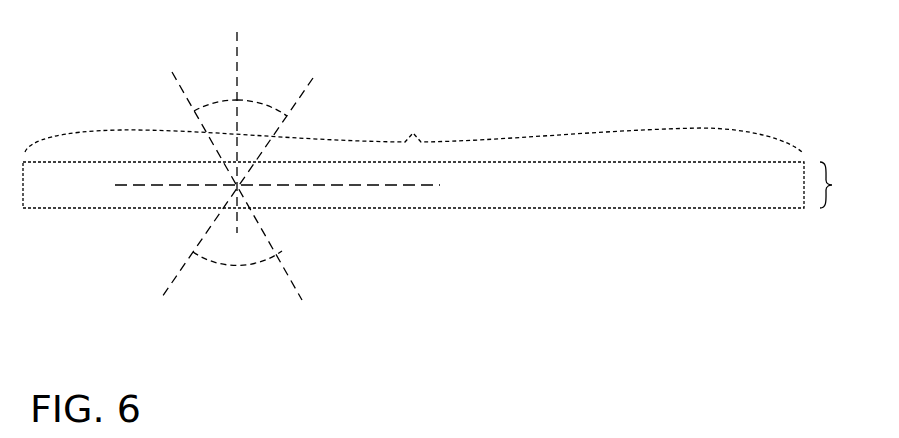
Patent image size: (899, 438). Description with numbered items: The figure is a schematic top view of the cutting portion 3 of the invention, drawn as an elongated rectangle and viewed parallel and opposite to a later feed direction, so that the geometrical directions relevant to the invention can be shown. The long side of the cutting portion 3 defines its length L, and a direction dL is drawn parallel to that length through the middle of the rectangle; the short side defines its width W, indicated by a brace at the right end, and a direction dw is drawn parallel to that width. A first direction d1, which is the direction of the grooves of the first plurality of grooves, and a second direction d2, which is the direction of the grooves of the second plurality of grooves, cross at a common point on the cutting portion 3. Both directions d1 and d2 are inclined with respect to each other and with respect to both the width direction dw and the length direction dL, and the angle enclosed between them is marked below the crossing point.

The cutting portion 3 is at (717, 183).
The direction parallel to the length of the cutting portion dL is at (403, 186).
The direction parallel to the width of the cutting portion dw is at (258, 123).
The first direction d1 is at (273, 202).
The second direction d2 is at (205, 205).
The length of the cutting portion L is at (414, 127).
The width of the cutting portion W is at (840, 185).